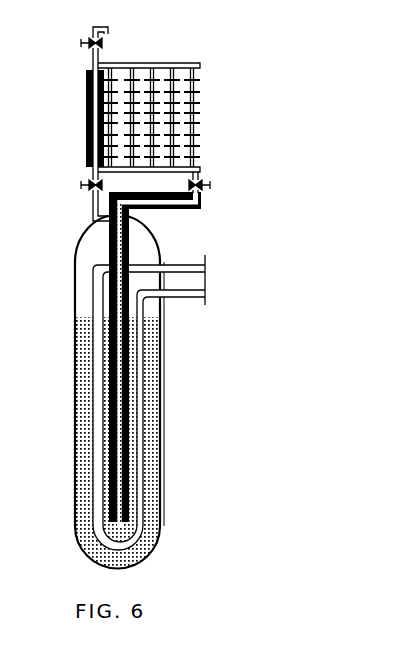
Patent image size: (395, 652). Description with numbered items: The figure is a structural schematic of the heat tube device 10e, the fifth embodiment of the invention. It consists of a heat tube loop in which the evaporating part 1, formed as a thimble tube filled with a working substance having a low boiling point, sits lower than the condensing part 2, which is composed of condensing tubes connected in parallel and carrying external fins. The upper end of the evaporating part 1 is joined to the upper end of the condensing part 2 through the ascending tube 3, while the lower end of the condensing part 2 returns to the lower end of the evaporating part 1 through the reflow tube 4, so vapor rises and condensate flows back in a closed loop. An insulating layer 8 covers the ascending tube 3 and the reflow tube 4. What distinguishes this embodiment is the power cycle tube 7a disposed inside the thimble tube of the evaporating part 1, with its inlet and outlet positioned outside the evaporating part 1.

The evaporating part 1 is at (77, 470).
The condensing part 2 is at (195, 88).
The ascending tube 3 is at (92, 212).
The reflow tube 4 is at (118, 263).
The power cycle tube 7a is at (182, 293).
The insulating layer 8 is at (89, 118).
The heat tube device 10e is at (145, 48).